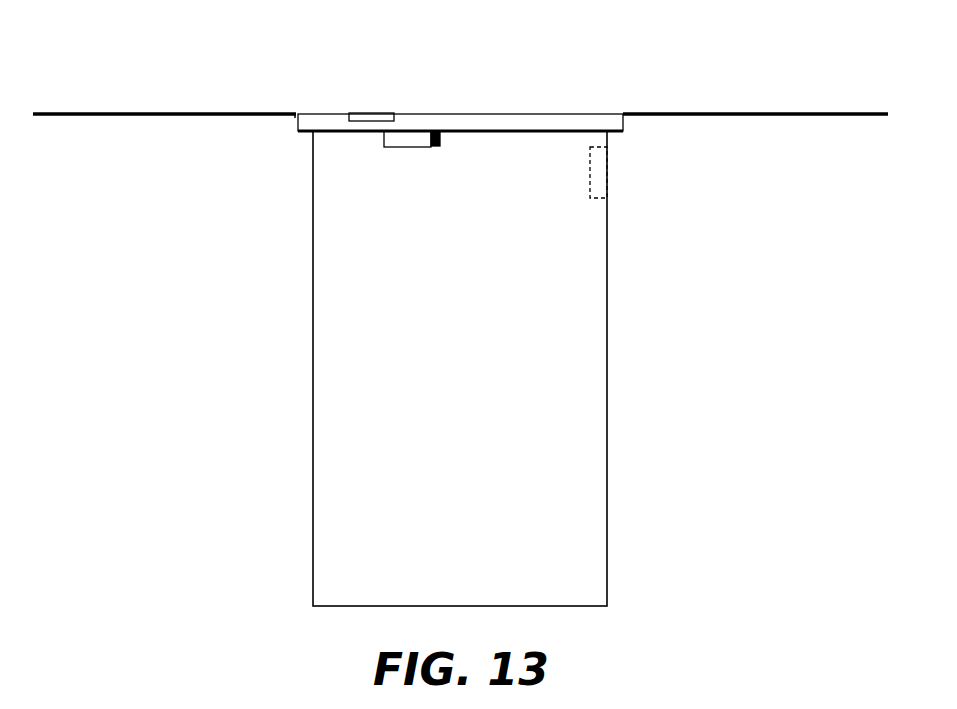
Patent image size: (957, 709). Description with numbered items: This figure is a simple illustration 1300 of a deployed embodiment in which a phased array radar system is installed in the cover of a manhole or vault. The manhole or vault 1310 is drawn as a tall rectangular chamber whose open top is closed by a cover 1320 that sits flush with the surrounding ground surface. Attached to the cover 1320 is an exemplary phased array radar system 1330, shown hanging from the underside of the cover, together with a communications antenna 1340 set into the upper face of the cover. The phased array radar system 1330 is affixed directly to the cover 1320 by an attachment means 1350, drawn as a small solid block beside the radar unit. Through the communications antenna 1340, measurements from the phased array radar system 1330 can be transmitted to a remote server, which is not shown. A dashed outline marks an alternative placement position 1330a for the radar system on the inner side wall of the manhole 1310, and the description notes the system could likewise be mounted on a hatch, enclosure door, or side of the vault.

The illustration 1300 is at (842, 56).
The manhole or vault 1310 is at (328, 358).
The cover 1320 is at (610, 123).
The phased array radar system 1330 is at (402, 140).
The alternative placement position 1330a is at (600, 177).
The communications antenna 1340 is at (383, 112).
The attachment means 1350 is at (441, 140).